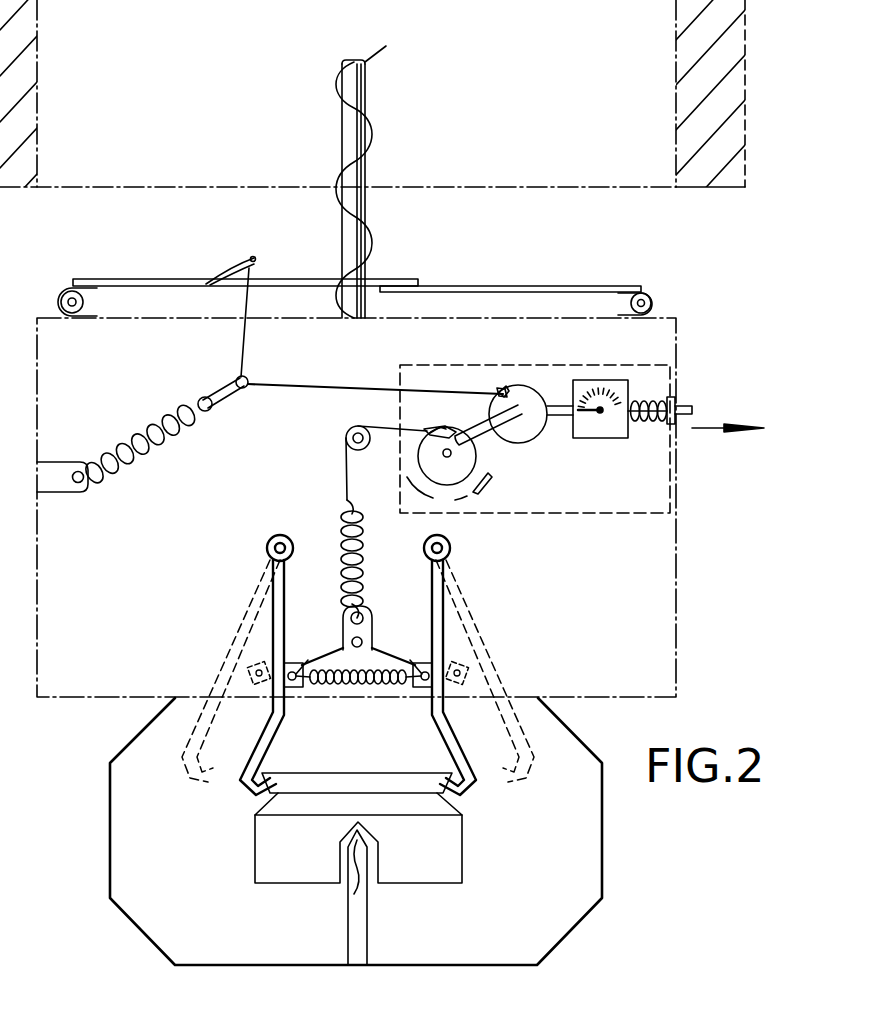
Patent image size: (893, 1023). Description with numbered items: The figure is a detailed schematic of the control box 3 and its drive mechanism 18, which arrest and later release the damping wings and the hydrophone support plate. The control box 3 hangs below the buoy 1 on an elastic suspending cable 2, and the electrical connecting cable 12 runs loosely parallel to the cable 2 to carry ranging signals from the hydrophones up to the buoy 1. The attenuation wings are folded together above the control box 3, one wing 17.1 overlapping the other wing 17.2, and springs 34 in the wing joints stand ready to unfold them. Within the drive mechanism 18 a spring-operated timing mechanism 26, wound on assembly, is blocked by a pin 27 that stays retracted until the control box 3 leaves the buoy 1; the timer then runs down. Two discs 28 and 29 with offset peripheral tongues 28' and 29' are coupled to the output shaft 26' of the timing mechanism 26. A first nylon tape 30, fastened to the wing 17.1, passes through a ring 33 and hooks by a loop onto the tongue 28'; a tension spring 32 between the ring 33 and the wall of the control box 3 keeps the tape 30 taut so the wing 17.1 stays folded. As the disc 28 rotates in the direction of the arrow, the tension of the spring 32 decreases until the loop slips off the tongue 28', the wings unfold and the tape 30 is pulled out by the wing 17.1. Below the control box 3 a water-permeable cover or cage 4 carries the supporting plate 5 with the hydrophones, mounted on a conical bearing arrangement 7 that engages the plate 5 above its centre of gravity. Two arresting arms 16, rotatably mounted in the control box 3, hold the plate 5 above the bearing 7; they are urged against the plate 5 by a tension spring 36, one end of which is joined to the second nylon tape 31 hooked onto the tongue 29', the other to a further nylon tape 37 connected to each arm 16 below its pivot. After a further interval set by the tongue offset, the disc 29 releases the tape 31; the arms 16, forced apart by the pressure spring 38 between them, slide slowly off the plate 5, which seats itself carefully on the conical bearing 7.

The buoy 1 is at (708, 167).
The elastic suspending cable 2 is at (358, 200).
The control box 3 is at (678, 642).
The cover or cage 4 is at (589, 840).
The supporting plate 5 is at (450, 849).
The conical bearing arrangement 7 is at (350, 880).
The electrical connecting cable 12 is at (371, 247).
The arresting arms 16 is at (263, 750).
The first attenuation wing 17.1 is at (155, 279).
The second attenuation wing 17.2 is at (524, 286).
The drive mechanism 18 is at (607, 514).
The timing mechanism 26 is at (601, 387).
The output shaft 26' is at (556, 375).
The pin 27 is at (687, 400).
The first disc 28 is at (510, 426).
The tongue of first disc 28' is at (478, 366).
The second disc 29 is at (464, 468).
The tongue of second disc 29' is at (433, 418).
The first nylon tape 30 is at (307, 388).
The second nylon tape 31 is at (373, 427).
The tension spring 32 is at (124, 436).
The ring 33 is at (217, 384).
The wing springs 34 is at (62, 297).
The tension spring 36 is at (367, 571).
The further nylon tape 37 is at (386, 653).
The pressure spring 38 is at (354, 688).